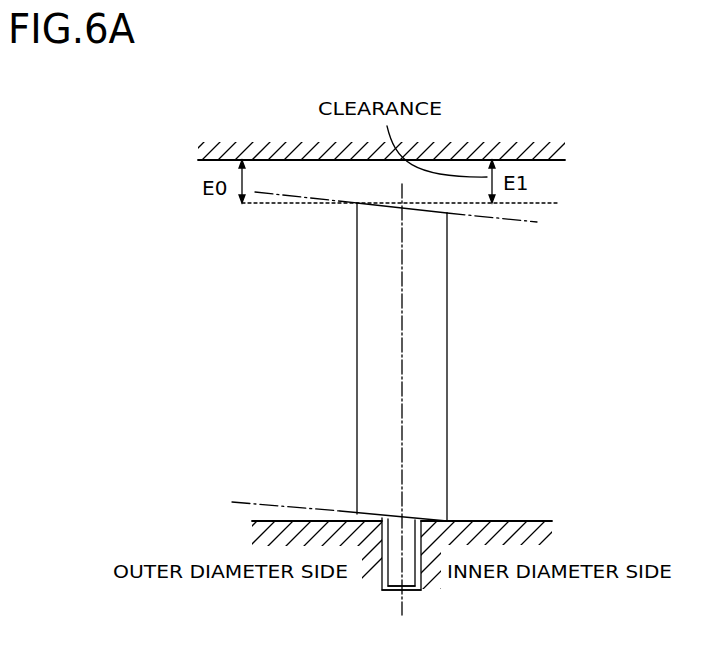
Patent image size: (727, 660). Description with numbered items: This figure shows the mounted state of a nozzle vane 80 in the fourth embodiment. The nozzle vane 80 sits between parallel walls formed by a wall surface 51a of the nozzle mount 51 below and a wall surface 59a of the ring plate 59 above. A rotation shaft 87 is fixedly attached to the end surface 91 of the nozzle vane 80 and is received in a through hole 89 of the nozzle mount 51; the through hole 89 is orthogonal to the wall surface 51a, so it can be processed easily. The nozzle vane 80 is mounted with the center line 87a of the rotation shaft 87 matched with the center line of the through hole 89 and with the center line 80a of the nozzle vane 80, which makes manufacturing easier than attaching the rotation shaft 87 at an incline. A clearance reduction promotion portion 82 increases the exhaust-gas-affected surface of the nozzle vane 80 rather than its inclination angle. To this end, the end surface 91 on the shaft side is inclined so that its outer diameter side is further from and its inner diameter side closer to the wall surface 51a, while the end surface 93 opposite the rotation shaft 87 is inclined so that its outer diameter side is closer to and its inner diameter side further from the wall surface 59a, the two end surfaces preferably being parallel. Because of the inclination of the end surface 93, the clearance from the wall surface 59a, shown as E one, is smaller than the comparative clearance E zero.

The ring plate 59 is at (540, 151).
The wall surface of ring plate 59a is at (268, 160).
The nozzle vane 80 is at (432, 377).
The center line of nozzle vane 80a is at (403, 403).
The clearance reduction promotion portion 82 is at (346, 222).
The end surface on side opposite to rotation shaft 93 is at (431, 204).
The end surface on rotation shaft side 91 is at (375, 503).
The nozzle mount 51 is at (530, 535).
The wall surface of nozzle mount 51a is at (509, 521).
The rotation shaft 87 is at (386, 577).
The through hole 89 is at (412, 592).
The center line of rotation shaft 87a is at (400, 612).